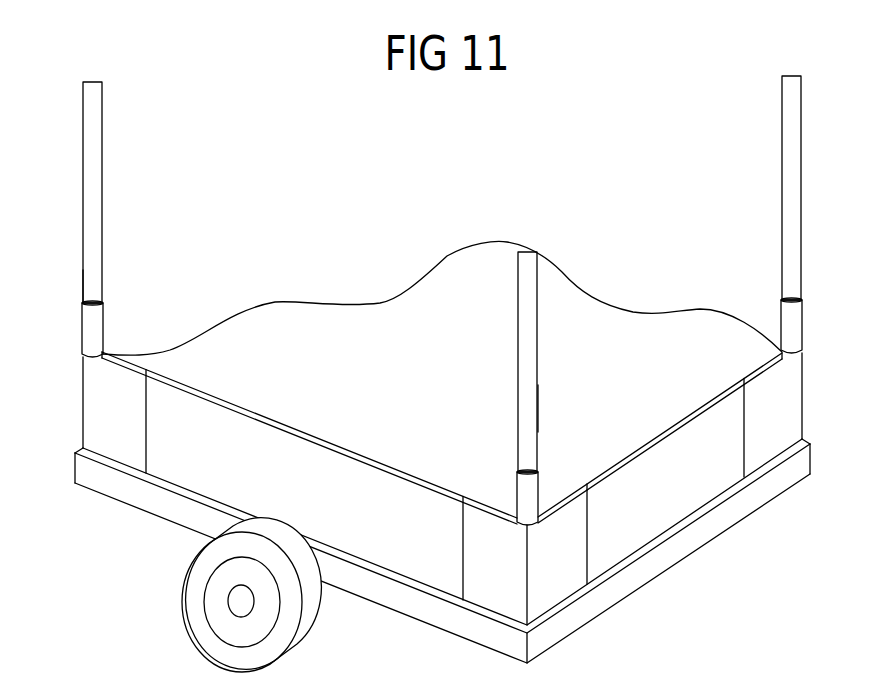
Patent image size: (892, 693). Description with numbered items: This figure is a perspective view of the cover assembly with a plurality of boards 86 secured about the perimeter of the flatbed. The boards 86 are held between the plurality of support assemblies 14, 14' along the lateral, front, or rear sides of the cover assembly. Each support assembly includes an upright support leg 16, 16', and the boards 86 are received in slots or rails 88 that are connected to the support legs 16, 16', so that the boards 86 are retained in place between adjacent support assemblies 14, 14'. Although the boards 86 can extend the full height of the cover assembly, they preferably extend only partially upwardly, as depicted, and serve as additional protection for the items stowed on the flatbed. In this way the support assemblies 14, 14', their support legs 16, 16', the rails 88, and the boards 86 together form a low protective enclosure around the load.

The support assembly 14 is at (66, 192).
The support leg 16 is at (61, 302).
The support assembly 14' is at (564, 362).
The support leg 16' is at (563, 447).
The board 86 is at (217, 475).
The slot or rail 88 is at (105, 407).